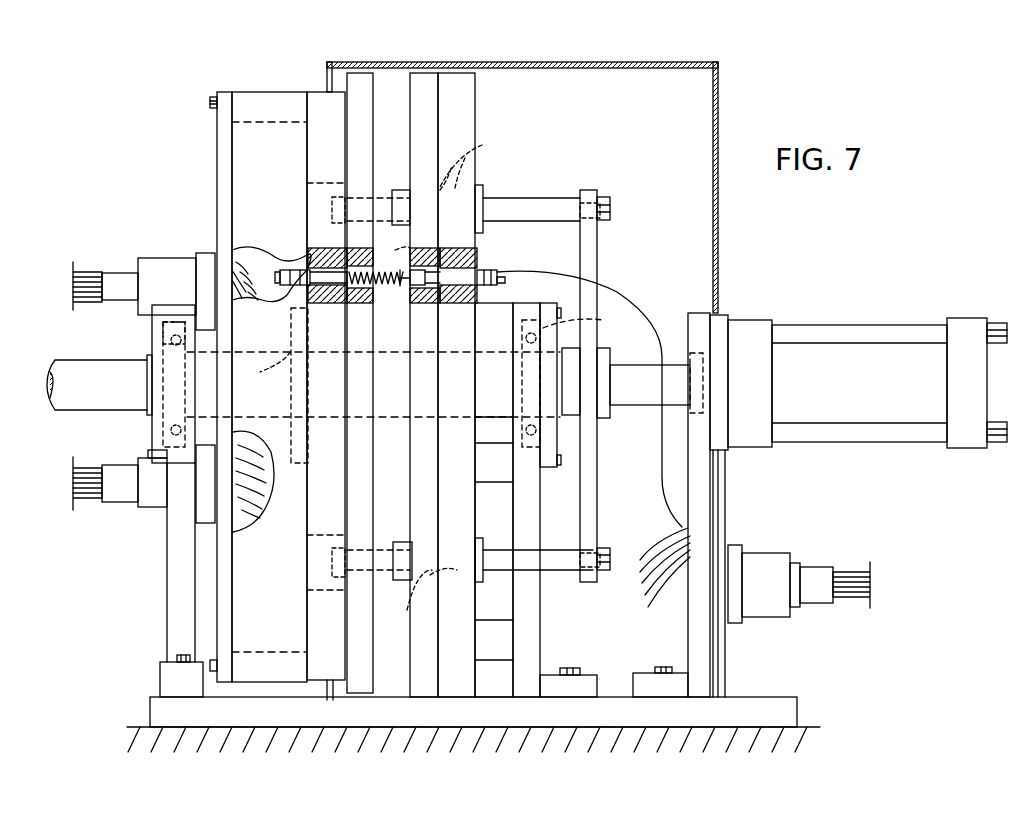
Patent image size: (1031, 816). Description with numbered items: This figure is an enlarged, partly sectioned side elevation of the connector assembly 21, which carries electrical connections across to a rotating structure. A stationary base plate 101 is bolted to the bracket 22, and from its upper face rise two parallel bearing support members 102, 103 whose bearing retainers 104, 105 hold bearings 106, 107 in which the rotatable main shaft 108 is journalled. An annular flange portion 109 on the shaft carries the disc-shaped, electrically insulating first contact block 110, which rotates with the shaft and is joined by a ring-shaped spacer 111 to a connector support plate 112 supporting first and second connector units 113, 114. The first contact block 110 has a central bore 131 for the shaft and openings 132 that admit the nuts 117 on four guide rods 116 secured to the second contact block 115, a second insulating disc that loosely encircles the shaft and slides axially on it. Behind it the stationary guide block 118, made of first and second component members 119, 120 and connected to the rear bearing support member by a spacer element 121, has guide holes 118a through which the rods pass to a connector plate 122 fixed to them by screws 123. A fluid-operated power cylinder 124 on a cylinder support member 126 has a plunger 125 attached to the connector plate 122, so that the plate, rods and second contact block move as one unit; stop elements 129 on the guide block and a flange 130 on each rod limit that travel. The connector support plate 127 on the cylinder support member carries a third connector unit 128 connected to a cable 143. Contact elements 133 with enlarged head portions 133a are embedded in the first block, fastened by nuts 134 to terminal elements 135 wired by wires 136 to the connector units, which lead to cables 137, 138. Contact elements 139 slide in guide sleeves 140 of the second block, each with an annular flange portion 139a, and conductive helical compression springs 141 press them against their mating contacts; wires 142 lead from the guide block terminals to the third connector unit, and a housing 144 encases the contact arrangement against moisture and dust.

The connector assembly 21 is at (190, 128).
The bracket 22 is at (140, 727).
The base plate 101 is at (392, 703).
The bearing support member 102 is at (167, 597).
The bearing support member 103 is at (537, 613).
The bearing retainer 104 is at (152, 432).
The bearing retainer 105 is at (553, 467).
The bearing 106 is at (163, 330).
The bearing 107 is at (592, 318).
The main shaft 108 is at (263, 407).
The annular flange portion 109 is at (265, 472).
The first contact block 110 is at (320, 92).
The spacer 111 is at (268, 92).
The connector support plate 112 is at (227, 92).
The first connector unit 113 is at (148, 258).
The second connector unit 114 is at (157, 508).
The second contact block 115 is at (362, 73).
The guide rod 116 is at (512, 202).
The nut 117 is at (347, 198).
The guide block 118 is at (468, 28).
The guide hole 118a is at (452, 385).
The first component member 119 is at (425, 73).
The second component member 120 is at (455, 73).
The spacer element 121 is at (495, 480).
The connector plate 122 is at (597, 254).
The screw 123 is at (610, 205).
The power cylinder 124 is at (868, 340).
The plunger 125 is at (637, 402).
The cylinder support member 126 is at (705, 500).
The connector support plate 127 is at (722, 644).
The third connector unit 128 is at (785, 610).
The stop element 129 is at (398, 190).
The flange 130 is at (487, 187).
The central bore 131 is at (267, 370).
The opening 132 is at (325, 183).
The contact element 133 is at (323, 248).
The enlarged head portion 133a is at (460, 250).
The nut 134 is at (298, 264).
The terminal element 135 is at (297, 270).
The wires 136 is at (232, 283).
The cable 137 is at (92, 273).
The cable 138 is at (87, 498).
The contact element 139 is at (375, 303).
The annular flange portion 139a is at (405, 440).
The guide sleeve 140 is at (323, 247).
The helical compression spring 141 is at (384, 285).
The wires 142 is at (650, 531).
The cable 143 is at (853, 572).
The housing 144 is at (690, 62).